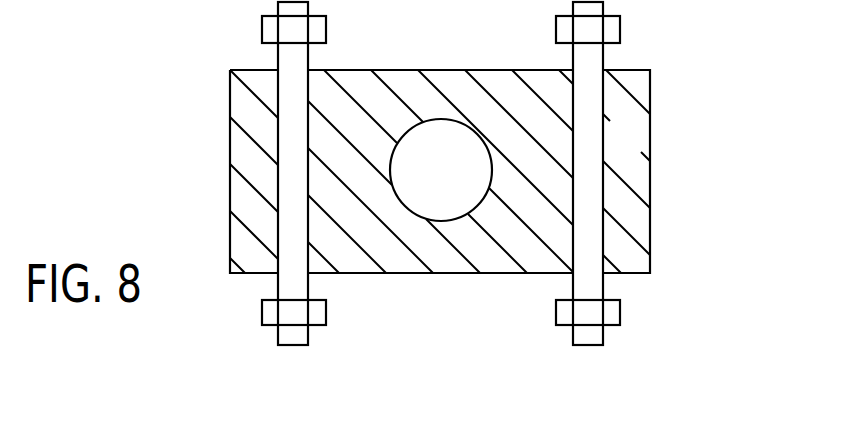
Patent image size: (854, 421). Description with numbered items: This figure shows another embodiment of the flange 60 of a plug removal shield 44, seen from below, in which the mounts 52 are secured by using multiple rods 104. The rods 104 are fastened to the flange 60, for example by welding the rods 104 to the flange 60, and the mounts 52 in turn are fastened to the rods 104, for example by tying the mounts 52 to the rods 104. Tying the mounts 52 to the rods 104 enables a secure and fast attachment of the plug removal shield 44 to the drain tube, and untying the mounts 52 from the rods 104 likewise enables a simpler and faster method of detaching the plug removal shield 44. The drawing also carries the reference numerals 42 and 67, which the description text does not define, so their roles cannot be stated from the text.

The plate 42 is at (440, 209).
The plug removal shield 44 is at (467, 196).
The mounts 52 is at (270, 32).
The flange 60 is at (642, 146).
The hole 67 is at (438, 142).
The rods 104 is at (288, 185).